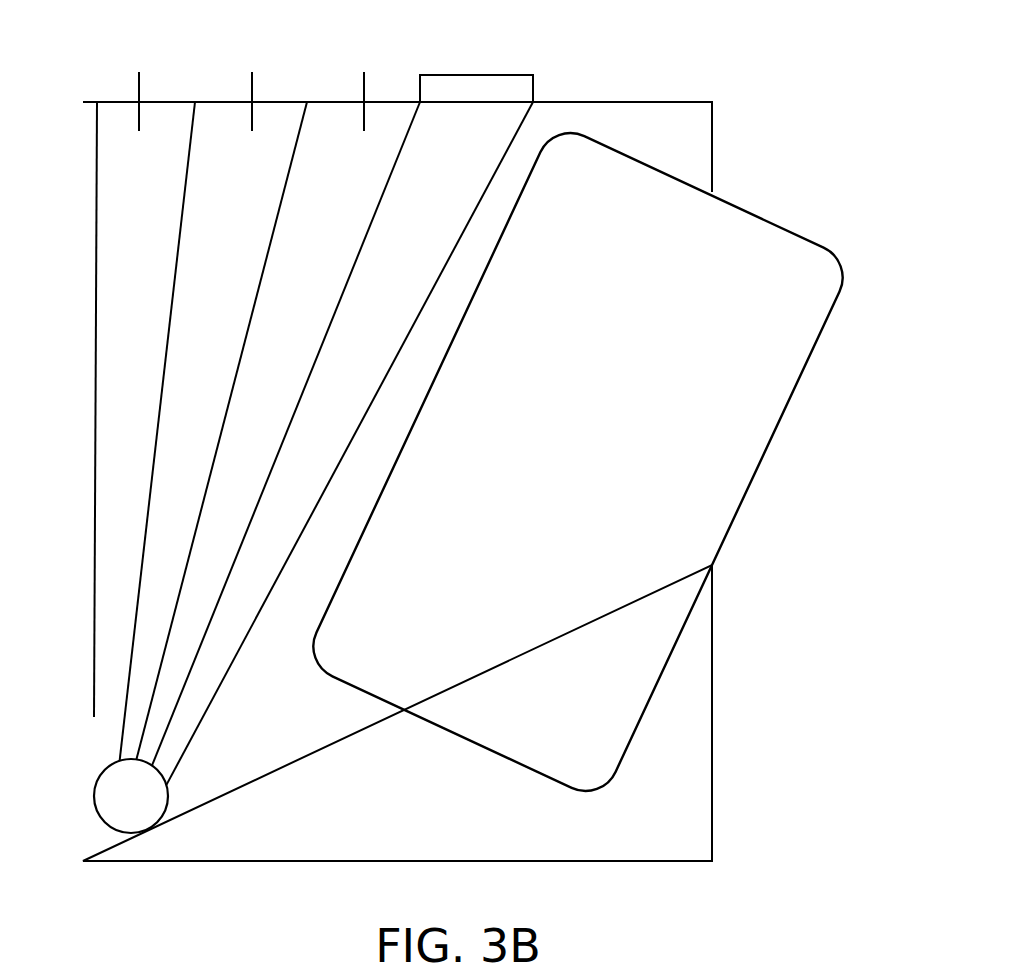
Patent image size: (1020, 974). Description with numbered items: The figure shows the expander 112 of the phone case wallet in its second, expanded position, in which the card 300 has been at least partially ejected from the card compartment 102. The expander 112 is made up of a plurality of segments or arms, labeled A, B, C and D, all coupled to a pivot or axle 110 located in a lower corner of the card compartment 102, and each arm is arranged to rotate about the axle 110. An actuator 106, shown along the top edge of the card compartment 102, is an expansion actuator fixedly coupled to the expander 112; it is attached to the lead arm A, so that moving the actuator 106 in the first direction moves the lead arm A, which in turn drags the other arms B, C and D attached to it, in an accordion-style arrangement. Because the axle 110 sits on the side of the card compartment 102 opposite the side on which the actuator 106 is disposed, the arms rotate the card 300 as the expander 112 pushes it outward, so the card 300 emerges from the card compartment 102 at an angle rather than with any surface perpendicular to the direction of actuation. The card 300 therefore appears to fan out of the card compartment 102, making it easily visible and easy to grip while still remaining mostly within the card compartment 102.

The card compartment 102 is at (667, 861).
The actuator 106 is at (513, 75).
The axle 110 is at (96, 796).
The expander 112 is at (96, 263).
The card 300 is at (815, 342).
The lead arm A is at (475, 130).
The arm B is at (365, 86).
The arm C is at (254, 86).
The arm D is at (143, 86).